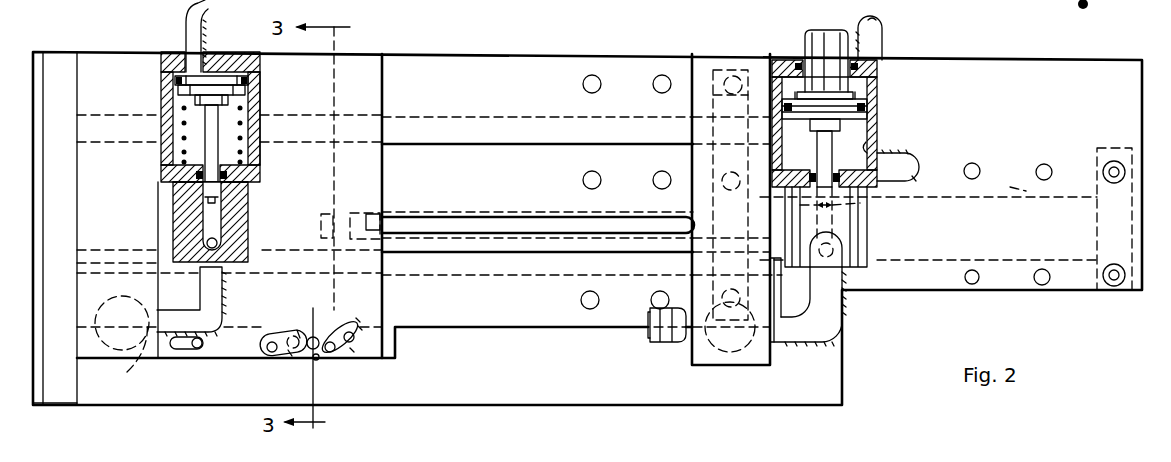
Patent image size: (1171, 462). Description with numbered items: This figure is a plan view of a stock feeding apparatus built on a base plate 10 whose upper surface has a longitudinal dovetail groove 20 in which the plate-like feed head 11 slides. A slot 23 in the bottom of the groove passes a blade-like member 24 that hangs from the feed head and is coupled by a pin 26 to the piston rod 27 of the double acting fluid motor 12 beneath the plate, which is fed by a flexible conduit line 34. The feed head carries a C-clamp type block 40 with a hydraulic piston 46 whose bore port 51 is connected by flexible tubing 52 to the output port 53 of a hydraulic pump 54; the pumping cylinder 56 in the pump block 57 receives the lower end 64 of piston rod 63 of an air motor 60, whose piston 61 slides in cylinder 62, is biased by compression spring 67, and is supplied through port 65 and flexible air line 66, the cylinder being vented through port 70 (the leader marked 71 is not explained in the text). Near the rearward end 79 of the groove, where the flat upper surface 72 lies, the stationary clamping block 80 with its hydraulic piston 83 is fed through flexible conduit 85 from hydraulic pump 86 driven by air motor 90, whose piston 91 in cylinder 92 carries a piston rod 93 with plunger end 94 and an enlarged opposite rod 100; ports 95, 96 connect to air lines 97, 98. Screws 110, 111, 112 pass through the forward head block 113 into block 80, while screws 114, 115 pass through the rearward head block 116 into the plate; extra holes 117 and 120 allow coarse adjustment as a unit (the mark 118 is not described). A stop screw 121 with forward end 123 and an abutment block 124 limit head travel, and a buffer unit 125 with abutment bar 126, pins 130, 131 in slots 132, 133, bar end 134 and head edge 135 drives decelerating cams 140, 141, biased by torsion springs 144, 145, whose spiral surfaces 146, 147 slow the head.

The base plate 10 is at (923, 292).
The feed head 11 is at (391, 71).
The fluid motor 12 is at (1010, 190).
The dovetail groove 20 is at (467, 143).
The slot 23 is at (503, 218).
The blade-like member 24 is at (339, 213).
The pin 26 is at (381, 215).
The piston rod 27 is at (567, 217).
The flexible conduit line 34 is at (762, 8).
The C-clamp type block 40 is at (112, 239).
The hydraulic piston 46 is at (120, 302).
The port 51 is at (125, 356).
The flexible tubing 52 is at (223, 310).
The output port 53 is at (225, 246).
The hydraulic pump 54 is at (170, 207).
The hydraulic pumping cylinder 56 is at (214, 215).
The pump block 57 is at (253, 190).
The air motor 60 is at (268, 106).
The piston 61 is at (197, 88).
The cylinder 62 is at (181, 116).
The piston rod 63 is at (222, 128).
The lower end 64 is at (252, 153).
The port 65 is at (188, 48).
The flexible air conducting tube 66 is at (206, 27).
The compression spring 67 is at (182, 156).
The port 70 is at (295, 119).
The rod end 71 is at (205, 198).
The flat upper surface 72 is at (1037, 105).
The rearward end 79 is at (781, 282).
The C-clamp type block 80 is at (760, 366).
The hydraulic piston 83 is at (718, 350).
The flexible conduit 85 is at (823, 342).
The hydraulic pump 86 is at (873, 245).
The air motor 90 is at (884, 91).
The piston 91 is at (870, 128).
The cylinder 92 is at (877, 141).
The piston rod 93 is at (817, 149).
The lower end 94 is at (862, 206).
The cylinder port 95 is at (879, 70).
The cylinder port 96 is at (867, 168).
The flexible air line 97 is at (882, 36).
The flexible air line 98 is at (917, 179).
The piston rod 100 is at (801, 38).
The screw 110 is at (728, 70).
The screw 111 is at (741, 166).
The screw 112 is at (715, 292).
The forward cylinder head block 113 is at (713, 107).
The screw 114 is at (1114, 160).
The screw 115 is at (1116, 288).
The rearward head block 116 is at (1097, 222).
The holes 117 is at (653, 80).
The support 118 is at (1117, 5).
The holes 120 is at (1038, 165).
The stop screw 121 is at (660, 347).
The forward end 123 is at (648, 333).
The abutment block 124 is at (53, 404).
The buffer unit 125 is at (303, 316).
The abutment bar 126 is at (386, 362).
The pins 130 is at (326, 331).
The pin 131 is at (199, 350).
The slot 132 is at (315, 361).
The slot 133 is at (181, 350).
The rearward end 134 is at (396, 338).
The rearward edge 135 is at (384, 293).
The decelerating cam 140 is at (362, 328).
The decelerating cam 141 is at (298, 330).
The torsion spring 144 is at (352, 350).
The torsion spring 145 is at (269, 358).
The operative peripheral surface 146 is at (359, 319).
The operative peripheral surface 147 is at (292, 357).